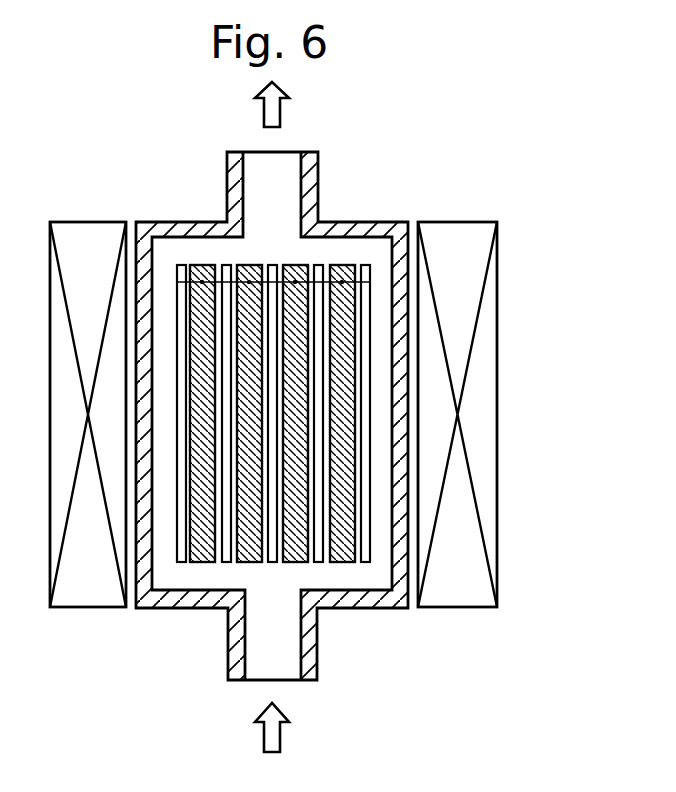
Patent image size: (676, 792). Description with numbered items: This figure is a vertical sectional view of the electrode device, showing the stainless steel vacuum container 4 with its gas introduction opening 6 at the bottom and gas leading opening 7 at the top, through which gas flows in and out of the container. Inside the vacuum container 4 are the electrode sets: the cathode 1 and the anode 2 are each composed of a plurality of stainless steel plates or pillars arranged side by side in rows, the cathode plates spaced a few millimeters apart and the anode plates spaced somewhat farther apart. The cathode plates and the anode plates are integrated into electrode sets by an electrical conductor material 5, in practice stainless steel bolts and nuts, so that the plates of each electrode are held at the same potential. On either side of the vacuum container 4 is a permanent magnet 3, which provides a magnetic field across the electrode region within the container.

The cathode 1 is at (202, 563).
The anode 2 is at (364, 266).
The permanent magnet 3 is at (88, 232).
The vacuum container 4 is at (345, 600).
The electrical conductor material 5 is at (208, 266).
The gas introduction opening 6 is at (245, 657).
The gas leading opening 7 is at (280, 163).